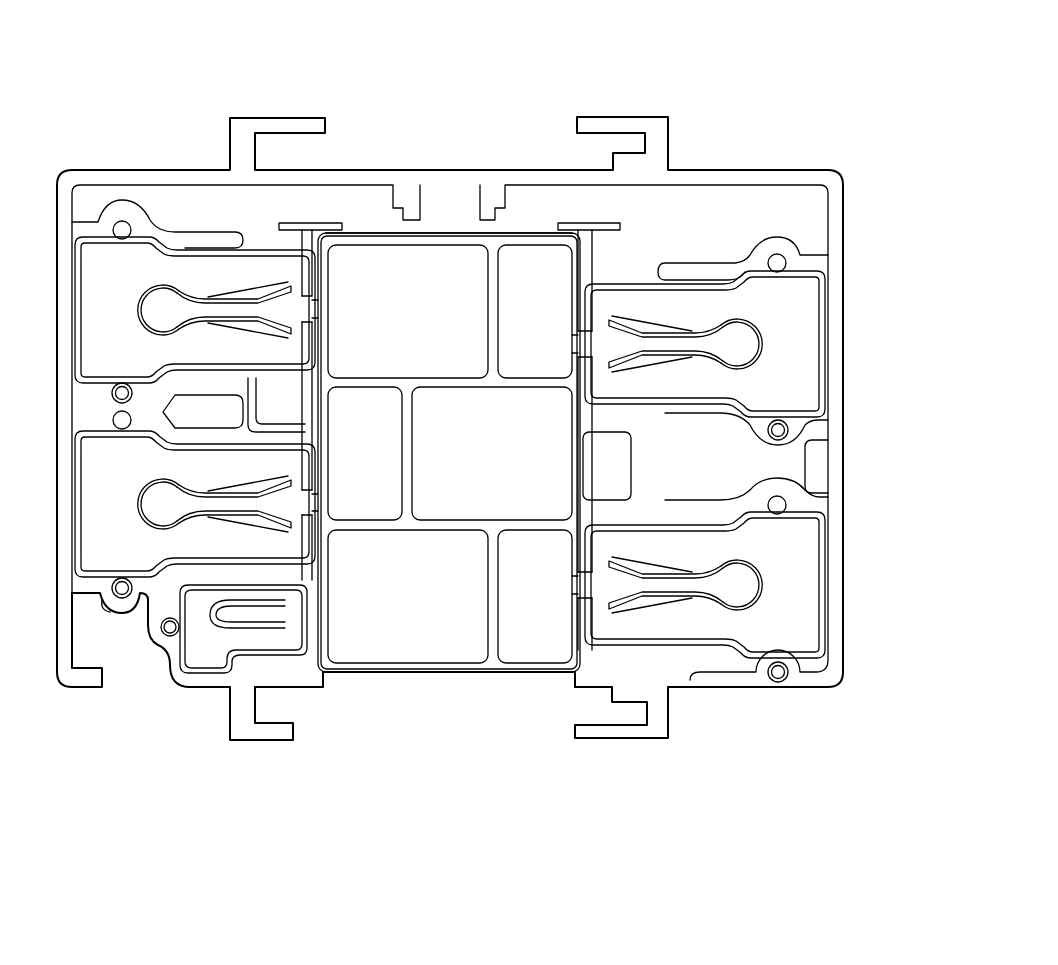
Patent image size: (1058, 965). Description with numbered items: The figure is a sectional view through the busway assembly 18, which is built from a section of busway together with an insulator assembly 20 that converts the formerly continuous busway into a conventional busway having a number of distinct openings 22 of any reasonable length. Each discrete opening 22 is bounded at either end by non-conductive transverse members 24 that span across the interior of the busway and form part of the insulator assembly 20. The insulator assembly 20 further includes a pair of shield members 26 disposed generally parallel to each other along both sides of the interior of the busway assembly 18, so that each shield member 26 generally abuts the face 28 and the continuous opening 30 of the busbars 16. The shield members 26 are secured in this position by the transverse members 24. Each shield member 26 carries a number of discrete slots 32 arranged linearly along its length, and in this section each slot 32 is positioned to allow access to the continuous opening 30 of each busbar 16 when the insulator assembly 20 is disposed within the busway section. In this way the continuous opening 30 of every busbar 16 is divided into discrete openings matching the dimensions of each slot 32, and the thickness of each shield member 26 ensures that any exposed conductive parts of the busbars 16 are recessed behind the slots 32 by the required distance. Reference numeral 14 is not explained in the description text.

The housing 14 is at (843, 222).
The busbar 16 is at (95, 268).
The busway assembly 18 is at (683, 100).
The insulator assembly 20 is at (422, 684).
The opening 22 is at (516, 740).
The transverse member 24 is at (430, 235).
The shield member 26 is at (300, 222).
The face 28 is at (310, 272).
The continuous opening 30 is at (312, 306).
The slot 32 is at (318, 318).